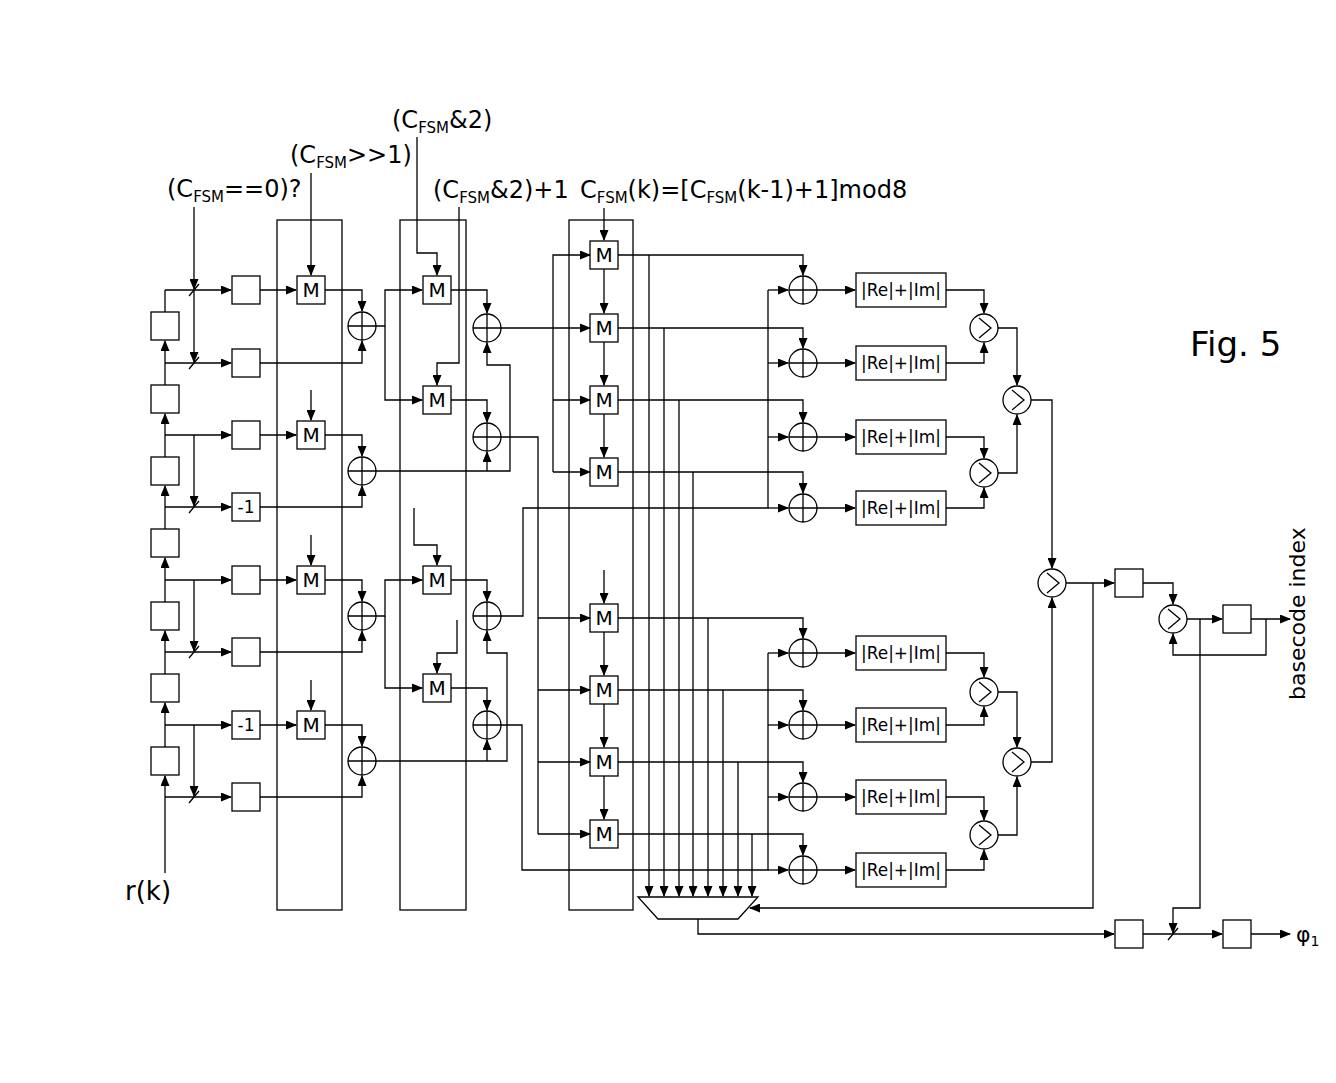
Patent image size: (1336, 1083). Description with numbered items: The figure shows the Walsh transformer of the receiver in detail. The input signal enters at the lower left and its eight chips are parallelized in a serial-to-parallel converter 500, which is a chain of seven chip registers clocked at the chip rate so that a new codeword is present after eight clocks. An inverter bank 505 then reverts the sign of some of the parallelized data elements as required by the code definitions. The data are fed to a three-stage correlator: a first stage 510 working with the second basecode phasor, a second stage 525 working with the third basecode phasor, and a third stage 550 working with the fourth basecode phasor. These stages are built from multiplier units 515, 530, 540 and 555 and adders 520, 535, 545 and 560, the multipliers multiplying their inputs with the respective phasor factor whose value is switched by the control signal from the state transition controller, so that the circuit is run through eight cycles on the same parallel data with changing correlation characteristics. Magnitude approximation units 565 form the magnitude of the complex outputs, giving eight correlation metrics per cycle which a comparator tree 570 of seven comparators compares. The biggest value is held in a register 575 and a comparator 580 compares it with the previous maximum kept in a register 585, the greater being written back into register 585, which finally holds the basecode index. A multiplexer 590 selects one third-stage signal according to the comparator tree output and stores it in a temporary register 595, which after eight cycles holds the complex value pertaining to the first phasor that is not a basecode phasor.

The serial-to-parallel converter 500 is at (151, 318).
The inverter bank 505 is at (246, 276).
The correlator stage 510 is at (308, 912).
The multiplier unit 515 is at (311, 304).
The adder 520 is at (368, 309).
The correlator stage 525 is at (433, 912).
The multiplier unit 530 is at (437, 304).
The adder 535 is at (500, 318).
The multiplier unit 540 is at (437, 414).
The adder 545 is at (496, 450).
The correlator stage 550 is at (598, 912).
The multiplier unit 555 is at (618, 243).
The adder 560 is at (813, 280).
The magnitude approximation unit 565 is at (925, 273).
The comparator tree 570 is at (1095, 258).
The register 575 is at (1129, 569).
The comparator 580 is at (1163, 631).
The register 585 is at (1237, 633).
The multiplexer 590 is at (672, 919).
The temporary register 595 is at (1129, 920).